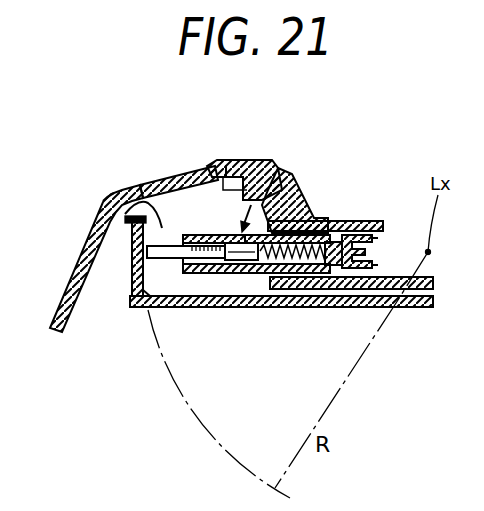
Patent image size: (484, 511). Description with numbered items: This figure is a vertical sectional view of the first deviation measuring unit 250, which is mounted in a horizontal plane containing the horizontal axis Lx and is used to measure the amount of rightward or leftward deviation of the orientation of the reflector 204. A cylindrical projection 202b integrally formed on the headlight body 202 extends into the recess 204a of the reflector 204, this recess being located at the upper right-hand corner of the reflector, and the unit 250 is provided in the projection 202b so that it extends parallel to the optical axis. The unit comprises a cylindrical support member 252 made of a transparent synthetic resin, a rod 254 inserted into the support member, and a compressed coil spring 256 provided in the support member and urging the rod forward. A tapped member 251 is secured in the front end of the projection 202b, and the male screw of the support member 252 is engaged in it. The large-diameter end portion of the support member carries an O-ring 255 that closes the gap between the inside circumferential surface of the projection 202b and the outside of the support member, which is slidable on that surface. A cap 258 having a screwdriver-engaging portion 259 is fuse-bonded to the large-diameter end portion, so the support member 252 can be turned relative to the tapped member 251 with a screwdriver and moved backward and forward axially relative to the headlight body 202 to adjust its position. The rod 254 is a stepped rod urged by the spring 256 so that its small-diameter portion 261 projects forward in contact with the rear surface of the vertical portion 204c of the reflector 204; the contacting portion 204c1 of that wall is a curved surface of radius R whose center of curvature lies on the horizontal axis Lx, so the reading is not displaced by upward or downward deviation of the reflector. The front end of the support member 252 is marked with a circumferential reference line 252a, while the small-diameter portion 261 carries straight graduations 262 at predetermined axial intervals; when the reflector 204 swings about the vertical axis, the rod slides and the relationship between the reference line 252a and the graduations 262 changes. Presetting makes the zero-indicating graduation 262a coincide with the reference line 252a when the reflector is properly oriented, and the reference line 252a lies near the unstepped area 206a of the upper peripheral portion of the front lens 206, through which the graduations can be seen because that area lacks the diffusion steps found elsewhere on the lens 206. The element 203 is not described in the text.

The headlight body 202 is at (342, 221).
The cylindrical projection 202b is at (398, 295).
The raised portion 203 is at (244, 165).
The reflector 204 is at (295, 307).
The recess 204a is at (161, 284).
The vertical portion 204c is at (133, 268).
The curved surface portion 204c1 is at (110, 198).
The front lens 206 is at (86, 242).
The unstepped area 206a is at (153, 180).
The first deviation measuring unit 250 is at (256, 186).
The tapped member 251 is at (276, 195).
The cylindrical support member 252 is at (259, 273).
The reference line 252a is at (193, 186).
The rod 254 is at (237, 273).
The O-ring 255 is at (320, 233).
The compressed coil spring 256 is at (313, 300).
The cap 258 is at (366, 235).
The screwdriver-engaging portion 259 is at (368, 255).
The small-diameter portion 261 is at (148, 192).
The graduations 262 is at (200, 273).
The zero-indicating graduation 262a is at (188, 273).